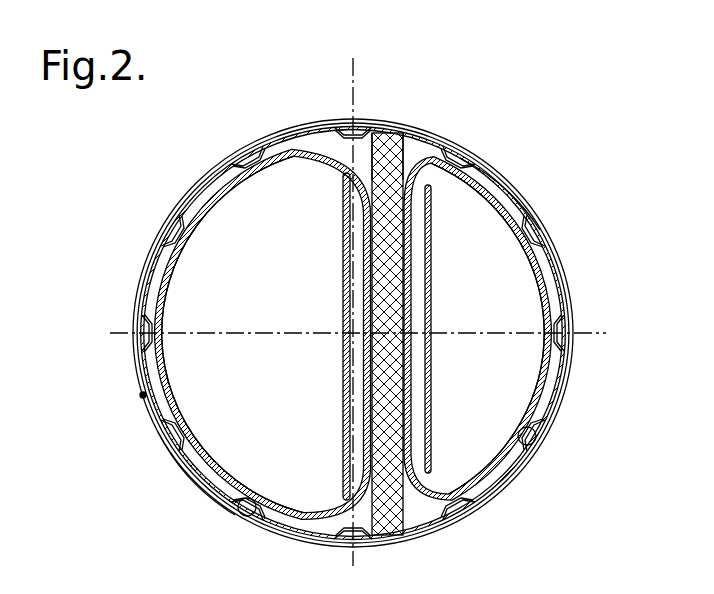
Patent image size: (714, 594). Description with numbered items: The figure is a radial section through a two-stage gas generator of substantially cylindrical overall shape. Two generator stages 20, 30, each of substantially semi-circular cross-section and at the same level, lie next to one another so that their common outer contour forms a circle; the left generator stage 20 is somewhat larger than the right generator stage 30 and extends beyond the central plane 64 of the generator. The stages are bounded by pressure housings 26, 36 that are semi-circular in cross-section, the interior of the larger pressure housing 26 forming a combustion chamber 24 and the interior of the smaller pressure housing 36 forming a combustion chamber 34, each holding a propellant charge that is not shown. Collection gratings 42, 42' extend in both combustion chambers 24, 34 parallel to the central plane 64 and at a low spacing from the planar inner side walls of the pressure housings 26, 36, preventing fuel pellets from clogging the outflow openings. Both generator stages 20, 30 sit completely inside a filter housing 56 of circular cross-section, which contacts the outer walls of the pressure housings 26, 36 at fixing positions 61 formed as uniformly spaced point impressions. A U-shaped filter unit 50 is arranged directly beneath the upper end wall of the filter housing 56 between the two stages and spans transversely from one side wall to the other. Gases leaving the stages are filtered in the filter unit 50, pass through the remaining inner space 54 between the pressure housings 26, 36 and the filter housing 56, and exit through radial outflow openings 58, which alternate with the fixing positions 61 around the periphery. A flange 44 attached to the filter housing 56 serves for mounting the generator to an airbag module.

The generator stage 20 is at (143, 396).
The combustion chamber 24 is at (205, 320).
The pressure housing 26 is at (213, 200).
The generator stage 30 is at (555, 292).
The combustion chamber 34 is at (490, 278).
The pressure housing 36 is at (487, 466).
The collection grating 42 is at (304, 336).
The collection grating 42' is at (472, 291).
The flange 44 is at (185, 452).
The filter unit 50 is at (385, 150).
The inner space 54 is at (418, 505).
The filter housing 56 is at (522, 210).
The outflow openings 58 is at (160, 272).
The fixing positions 61 is at (247, 514).
The central plane 64 is at (356, 297).